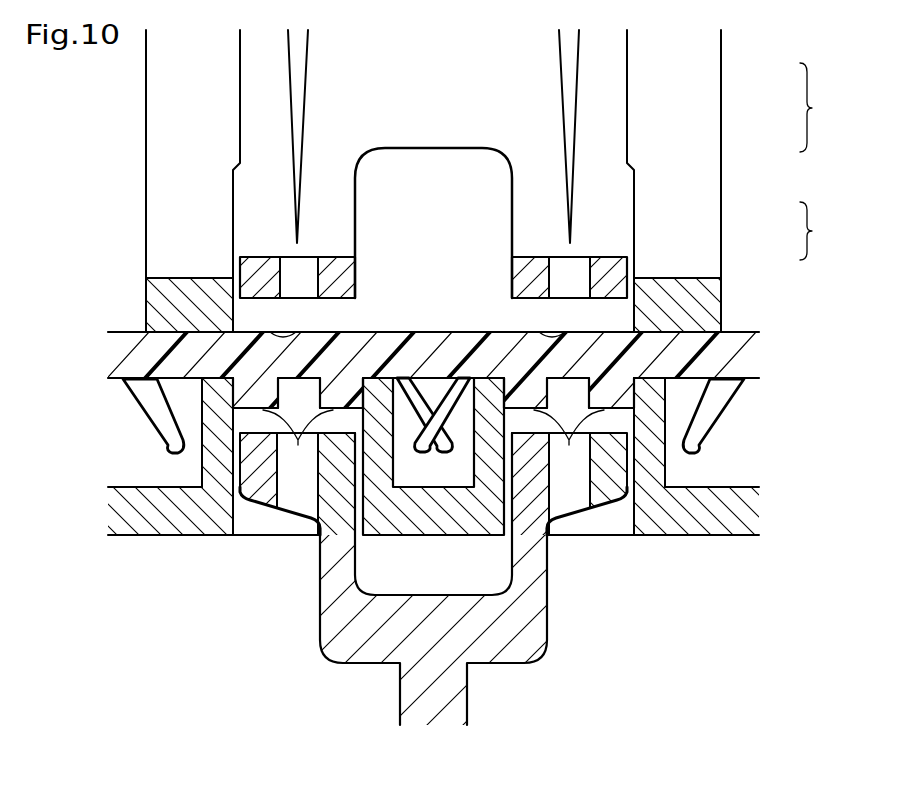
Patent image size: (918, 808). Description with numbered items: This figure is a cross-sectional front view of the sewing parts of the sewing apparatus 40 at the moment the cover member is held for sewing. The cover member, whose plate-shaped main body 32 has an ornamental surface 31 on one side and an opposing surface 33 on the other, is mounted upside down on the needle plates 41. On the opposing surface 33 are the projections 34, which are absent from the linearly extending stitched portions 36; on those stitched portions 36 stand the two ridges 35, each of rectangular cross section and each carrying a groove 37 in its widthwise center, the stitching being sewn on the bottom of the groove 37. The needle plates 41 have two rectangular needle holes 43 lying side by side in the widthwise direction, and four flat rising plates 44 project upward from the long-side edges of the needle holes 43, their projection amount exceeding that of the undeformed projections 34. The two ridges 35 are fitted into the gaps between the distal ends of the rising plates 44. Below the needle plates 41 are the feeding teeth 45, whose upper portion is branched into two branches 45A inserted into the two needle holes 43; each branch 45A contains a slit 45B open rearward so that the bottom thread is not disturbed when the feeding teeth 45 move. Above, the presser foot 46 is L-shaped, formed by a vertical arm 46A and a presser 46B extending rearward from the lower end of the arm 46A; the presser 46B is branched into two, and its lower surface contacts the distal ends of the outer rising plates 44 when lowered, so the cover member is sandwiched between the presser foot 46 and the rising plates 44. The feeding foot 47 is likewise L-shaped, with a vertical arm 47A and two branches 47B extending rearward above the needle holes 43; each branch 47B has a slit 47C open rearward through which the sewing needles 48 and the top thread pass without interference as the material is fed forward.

The ornamental surface 31 is at (743, 328).
The main body 32 is at (120, 355).
The opposing surface 33 is at (128, 393).
The projections 34 is at (460, 378).
The ridges 35 is at (433, 441).
The stitched portions 36 is at (281, 324).
The groove 37 is at (318, 392).
The sewing apparatus 40 is at (820, 54).
The needle plates 41 is at (125, 484).
The needle holes 43 is at (243, 528).
The rising plates 44 is at (201, 459).
The feeding teeth 45 is at (547, 652).
The branches 45A is at (260, 495).
The slit 45B is at (297, 490).
The presser foot 46 is at (819, 231).
The arm 46A is at (160, 140).
The presser 46B is at (188, 278).
The feeding foot 47 is at (819, 107).
The arm 47A is at (253, 85).
The branches 47B is at (337, 264).
The slit 47C is at (316, 277).
The sewing needles 48 is at (308, 52).